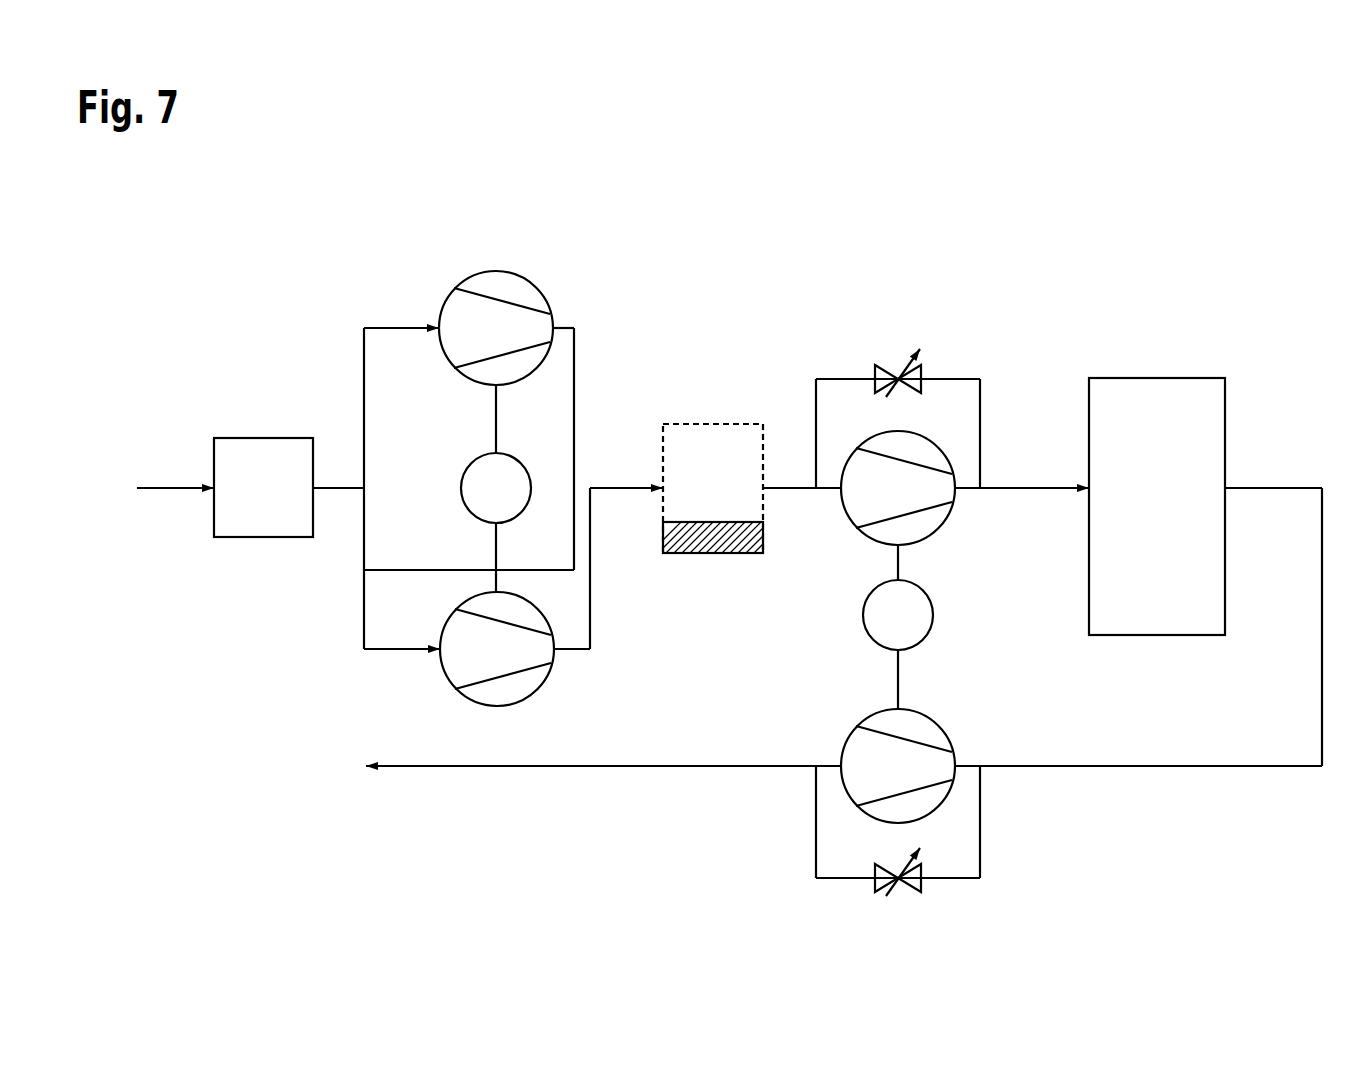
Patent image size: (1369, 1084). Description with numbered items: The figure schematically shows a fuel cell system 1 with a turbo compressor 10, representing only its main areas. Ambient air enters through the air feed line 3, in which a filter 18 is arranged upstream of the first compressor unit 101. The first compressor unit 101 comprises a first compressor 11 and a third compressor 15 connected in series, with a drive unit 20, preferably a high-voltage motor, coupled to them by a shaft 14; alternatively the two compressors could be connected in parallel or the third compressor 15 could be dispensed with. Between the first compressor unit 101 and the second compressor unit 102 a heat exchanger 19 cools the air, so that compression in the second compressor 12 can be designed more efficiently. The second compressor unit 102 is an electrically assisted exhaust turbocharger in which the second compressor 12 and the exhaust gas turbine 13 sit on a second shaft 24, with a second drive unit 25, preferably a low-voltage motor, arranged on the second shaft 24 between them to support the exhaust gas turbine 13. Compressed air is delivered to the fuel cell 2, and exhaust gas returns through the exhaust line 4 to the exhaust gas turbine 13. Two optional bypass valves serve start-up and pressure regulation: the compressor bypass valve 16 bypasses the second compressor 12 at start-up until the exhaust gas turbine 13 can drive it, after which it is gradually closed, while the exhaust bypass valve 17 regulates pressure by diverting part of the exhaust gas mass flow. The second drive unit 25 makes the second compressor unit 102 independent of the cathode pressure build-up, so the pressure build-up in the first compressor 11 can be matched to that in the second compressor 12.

The fuel cell system 1 is at (843, 252).
The fuel cell 2 is at (1153, 377).
The air feed line 3 is at (1021, 486).
The exhaust line 4 is at (1154, 764).
The turbo compressor 10 is at (700, 252).
The first compressor 11 is at (500, 271).
The second compressor 12 is at (947, 446).
The exhaust gas turbine 13 is at (857, 727).
The shaft 14 is at (495, 421).
The third compressor 15 is at (550, 676).
The compressor bypass valve 16 is at (889, 364).
The exhaust bypass valve 17 is at (877, 883).
The filter 18 is at (266, 437).
The heat exchanger 19 is at (715, 423).
The drive unit 20 is at (462, 490).
The second shaft 24 is at (898, 683).
The second drive unit 25 is at (863, 622).
The first compressor unit 101 is at (513, 425).
The second compressor unit 102 is at (885, 594).